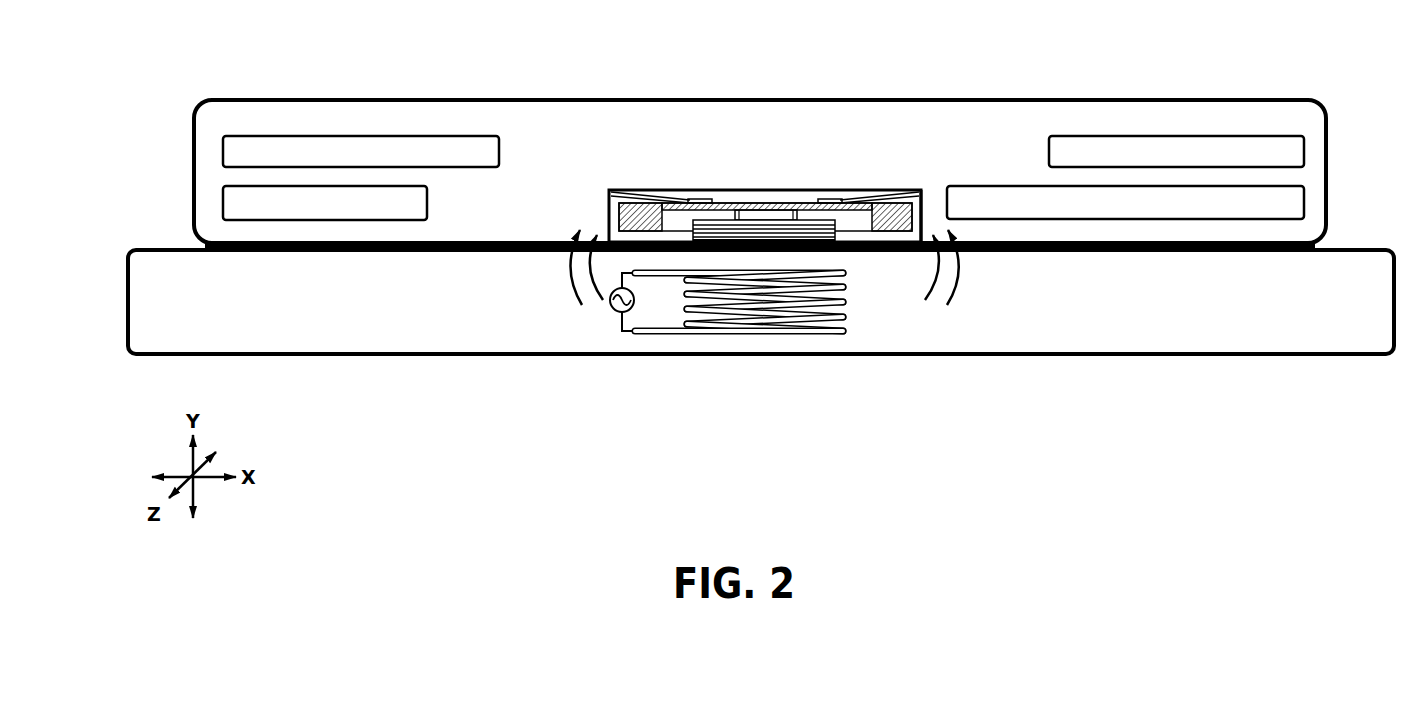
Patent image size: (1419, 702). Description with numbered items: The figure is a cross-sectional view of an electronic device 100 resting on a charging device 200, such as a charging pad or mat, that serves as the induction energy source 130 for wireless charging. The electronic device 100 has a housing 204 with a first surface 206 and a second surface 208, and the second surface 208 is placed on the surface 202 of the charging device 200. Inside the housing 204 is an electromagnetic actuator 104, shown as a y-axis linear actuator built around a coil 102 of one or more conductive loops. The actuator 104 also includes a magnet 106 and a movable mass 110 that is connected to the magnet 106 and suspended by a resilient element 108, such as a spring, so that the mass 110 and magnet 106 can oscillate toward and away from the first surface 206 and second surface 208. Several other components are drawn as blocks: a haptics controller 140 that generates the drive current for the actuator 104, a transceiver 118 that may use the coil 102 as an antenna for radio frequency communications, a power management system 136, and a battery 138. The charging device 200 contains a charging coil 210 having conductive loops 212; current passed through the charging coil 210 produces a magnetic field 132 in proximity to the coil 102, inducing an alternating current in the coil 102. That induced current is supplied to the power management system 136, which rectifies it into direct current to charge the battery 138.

The electronic device 100 is at (188, 71).
The coil 102 is at (693, 221).
The electromagnetic actuator 104 is at (608, 190).
The magnet 106 is at (757, 210).
The resilient element 108 is at (863, 196).
The movable mass 110 is at (920, 190).
The transceiver 118 is at (325, 203).
The induction energy source 130 is at (361, 335).
The magnetic field 132 is at (568, 280).
The power management system 136 is at (1125, 202).
The battery 138 is at (1176, 151).
The haptics controller 140 is at (361, 151).
The charging device 200 is at (163, 374).
The surface 202 is at (158, 250).
The housing 204 is at (194, 198).
The first surface 206 is at (1248, 100).
The second surface 208 is at (1268, 251).
The charging coil 210 is at (779, 340).
The conductive loops 212 is at (845, 300).